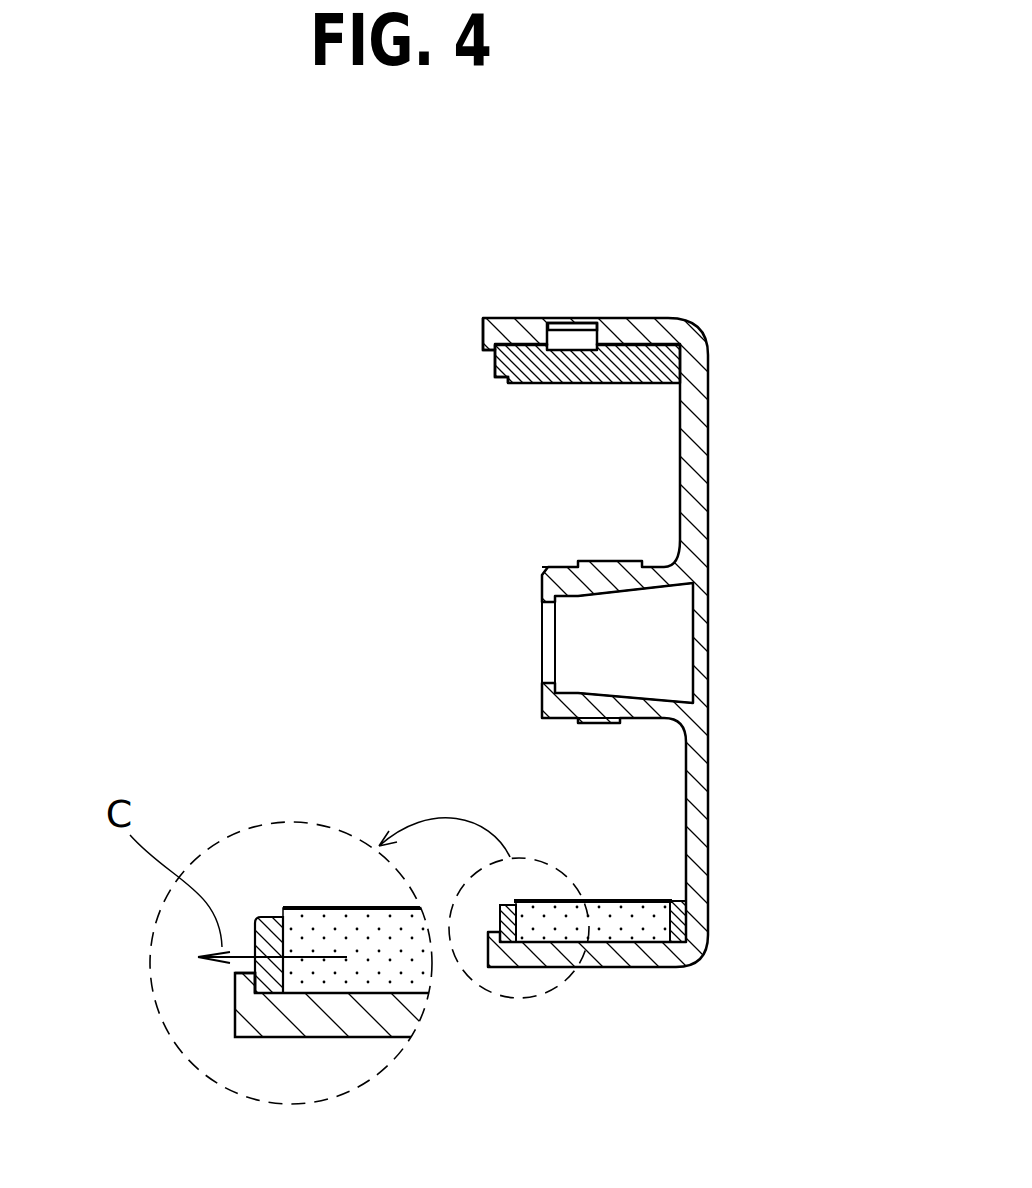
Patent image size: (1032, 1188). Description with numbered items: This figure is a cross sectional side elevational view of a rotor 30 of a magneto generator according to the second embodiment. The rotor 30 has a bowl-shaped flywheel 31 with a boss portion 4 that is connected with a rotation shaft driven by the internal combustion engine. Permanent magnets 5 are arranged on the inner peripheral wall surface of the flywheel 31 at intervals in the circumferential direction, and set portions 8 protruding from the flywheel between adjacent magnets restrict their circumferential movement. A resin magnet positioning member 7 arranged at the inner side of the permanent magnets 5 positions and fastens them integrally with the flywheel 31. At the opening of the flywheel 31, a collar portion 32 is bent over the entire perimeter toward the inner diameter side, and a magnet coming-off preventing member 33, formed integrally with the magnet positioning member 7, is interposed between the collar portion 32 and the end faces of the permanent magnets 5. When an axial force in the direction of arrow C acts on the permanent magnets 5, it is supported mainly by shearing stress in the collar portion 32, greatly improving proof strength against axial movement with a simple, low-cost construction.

The rotor 30 is at (744, 314).
The flywheel 31 is at (708, 457).
The boss portion 4 is at (605, 578).
The magnet positioning member 7 is at (643, 322).
The set portions 8 is at (572, 322).
The magnet coming-off preventing member 33 is at (265, 917).
The permanent magnets 5 is at (636, 920).
The collar portion 32 is at (493, 350).